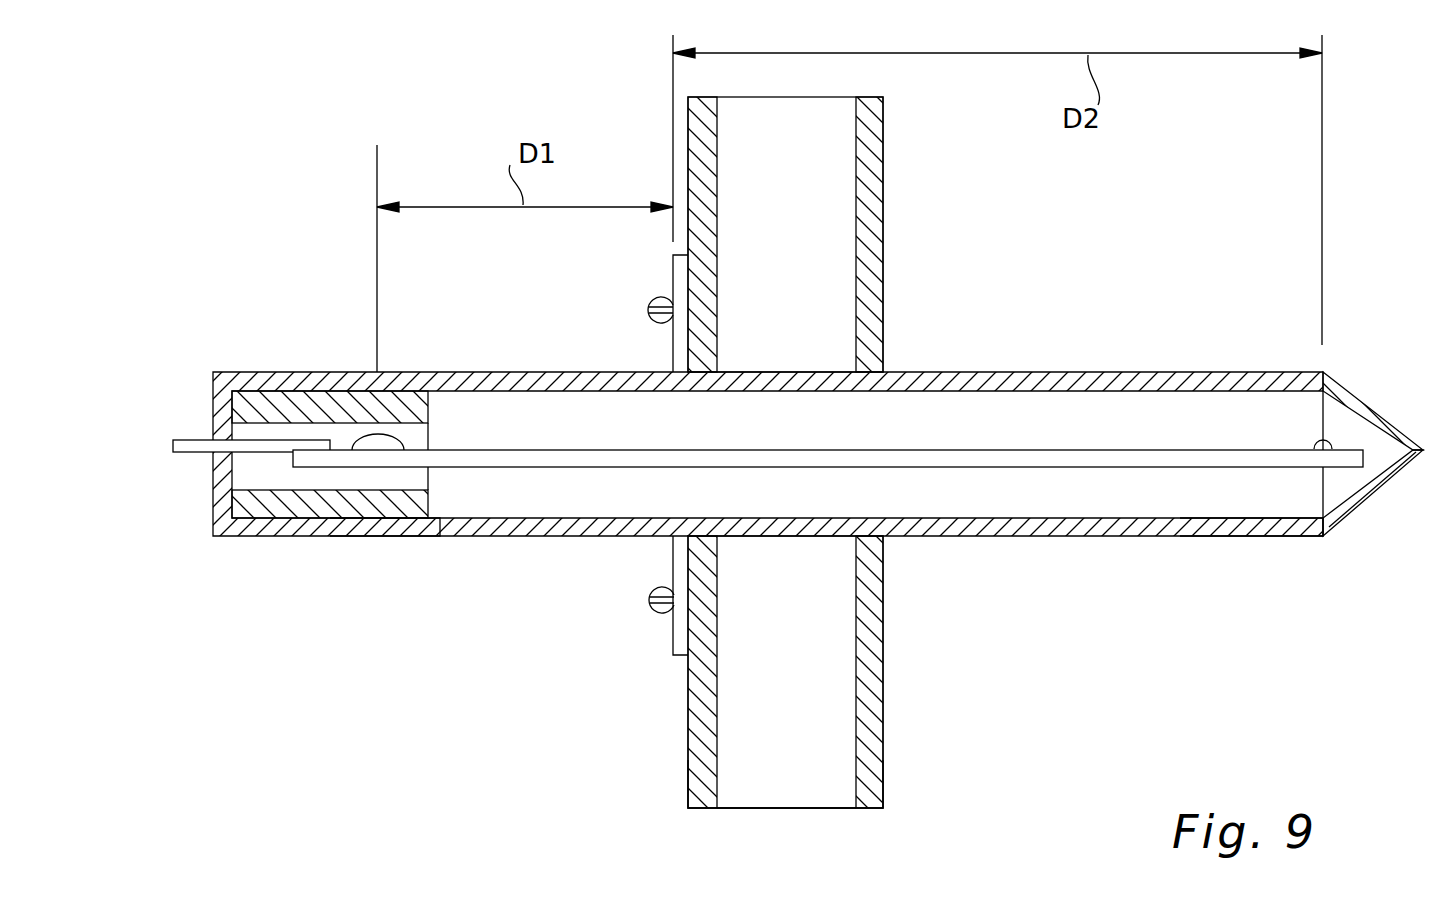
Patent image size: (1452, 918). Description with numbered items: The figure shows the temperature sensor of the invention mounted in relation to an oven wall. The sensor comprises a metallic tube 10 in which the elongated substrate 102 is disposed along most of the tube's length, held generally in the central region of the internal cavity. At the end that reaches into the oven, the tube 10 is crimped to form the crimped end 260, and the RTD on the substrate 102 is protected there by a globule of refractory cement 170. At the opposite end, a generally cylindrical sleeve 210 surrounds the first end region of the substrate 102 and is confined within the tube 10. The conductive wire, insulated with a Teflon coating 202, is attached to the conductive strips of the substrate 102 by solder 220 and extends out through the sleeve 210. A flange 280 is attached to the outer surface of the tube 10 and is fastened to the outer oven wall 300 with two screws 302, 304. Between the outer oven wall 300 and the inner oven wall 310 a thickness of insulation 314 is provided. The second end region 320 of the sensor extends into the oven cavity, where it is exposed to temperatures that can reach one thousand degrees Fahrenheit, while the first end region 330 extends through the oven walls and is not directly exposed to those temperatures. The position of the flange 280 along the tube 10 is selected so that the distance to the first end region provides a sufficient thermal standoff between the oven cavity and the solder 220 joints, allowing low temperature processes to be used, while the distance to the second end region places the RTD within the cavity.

The metallic tube 10 is at (1172, 370).
The substrate 102 is at (933, 458).
The refractory cement 170 is at (1330, 441).
The Teflon coating 202 is at (195, 440).
The sleeve 210 is at (268, 510).
The solder 220 is at (383, 436).
The crimped end 260 is at (1360, 505).
The flange 280 is at (680, 645).
The outer oven wall 300 is at (695, 783).
The screw 302 is at (651, 310).
The screw 304 is at (650, 600).
The inner oven wall 310 is at (875, 712).
The insulation 314 is at (832, 776).
The second end region 320 is at (1262, 538).
The first end region 330 is at (365, 540).